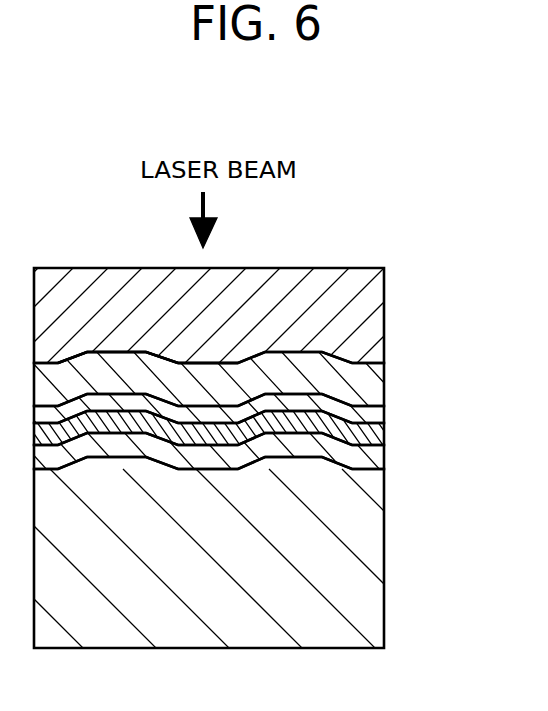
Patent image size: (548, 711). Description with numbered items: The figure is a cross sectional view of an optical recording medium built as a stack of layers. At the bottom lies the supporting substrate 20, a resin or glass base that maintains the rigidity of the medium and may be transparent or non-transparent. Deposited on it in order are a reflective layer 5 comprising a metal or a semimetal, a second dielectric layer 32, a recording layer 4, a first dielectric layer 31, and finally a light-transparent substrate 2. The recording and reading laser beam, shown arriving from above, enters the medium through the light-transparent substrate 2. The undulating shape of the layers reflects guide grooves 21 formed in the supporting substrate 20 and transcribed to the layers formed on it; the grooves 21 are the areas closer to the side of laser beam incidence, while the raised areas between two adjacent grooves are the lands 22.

The light-transparent substrate 2 is at (378, 310).
The guide grooves 21 is at (132, 350).
The lands 22 is at (208, 362).
The first dielectric layer 31 is at (378, 382).
The recording layer 4 is at (378, 413).
The second dielectric layer 32 is at (378, 440).
The reflective layer 5 is at (378, 457).
The supporting substrate 20 is at (378, 505).